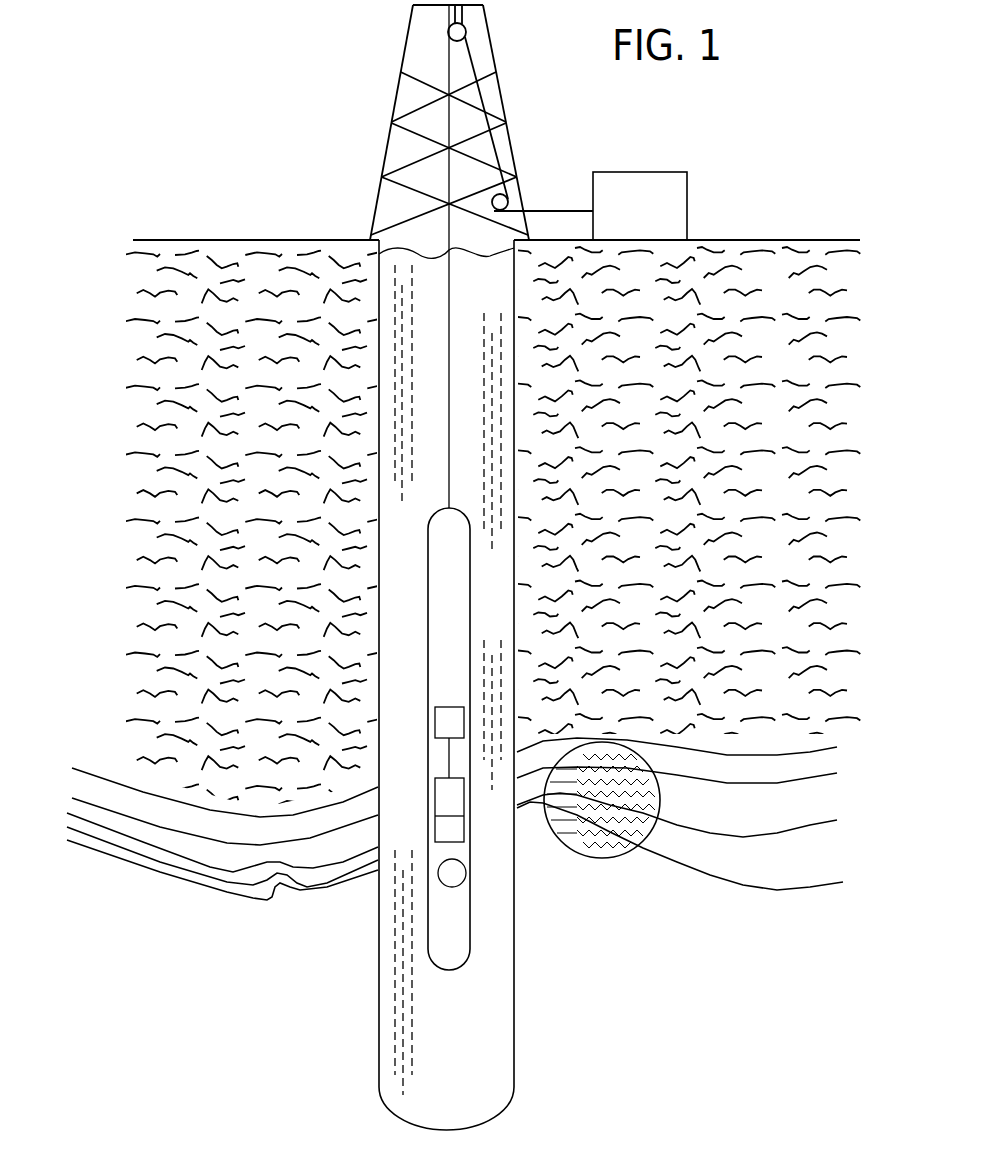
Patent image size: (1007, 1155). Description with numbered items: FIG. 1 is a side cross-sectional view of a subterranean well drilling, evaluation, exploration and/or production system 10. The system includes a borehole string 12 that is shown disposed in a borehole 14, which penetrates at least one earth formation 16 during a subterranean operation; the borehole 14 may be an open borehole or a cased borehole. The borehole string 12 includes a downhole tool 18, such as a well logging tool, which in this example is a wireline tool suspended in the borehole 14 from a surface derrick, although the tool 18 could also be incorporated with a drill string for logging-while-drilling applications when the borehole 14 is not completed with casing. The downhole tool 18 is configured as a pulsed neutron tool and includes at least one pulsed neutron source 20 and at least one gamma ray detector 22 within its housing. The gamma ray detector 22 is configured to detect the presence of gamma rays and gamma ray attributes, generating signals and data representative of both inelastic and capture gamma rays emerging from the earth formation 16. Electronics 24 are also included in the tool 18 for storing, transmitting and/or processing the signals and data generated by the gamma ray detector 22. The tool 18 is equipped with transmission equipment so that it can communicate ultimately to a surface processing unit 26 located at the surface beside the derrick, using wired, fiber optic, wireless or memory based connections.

The subterranean well drilling, evaluation, exploration and/or production system 10 is at (363, 256).
The borehole string 12 is at (410, 603).
The borehole 14 is at (510, 1105).
The earth formation 16 is at (657, 837).
The downhole tool 18 is at (472, 940).
The pulsed neutron source 20 is at (458, 808).
The gamma ray detector 22 is at (443, 876).
The electronics 24 is at (449, 720).
The surface processing unit 26 is at (675, 170).